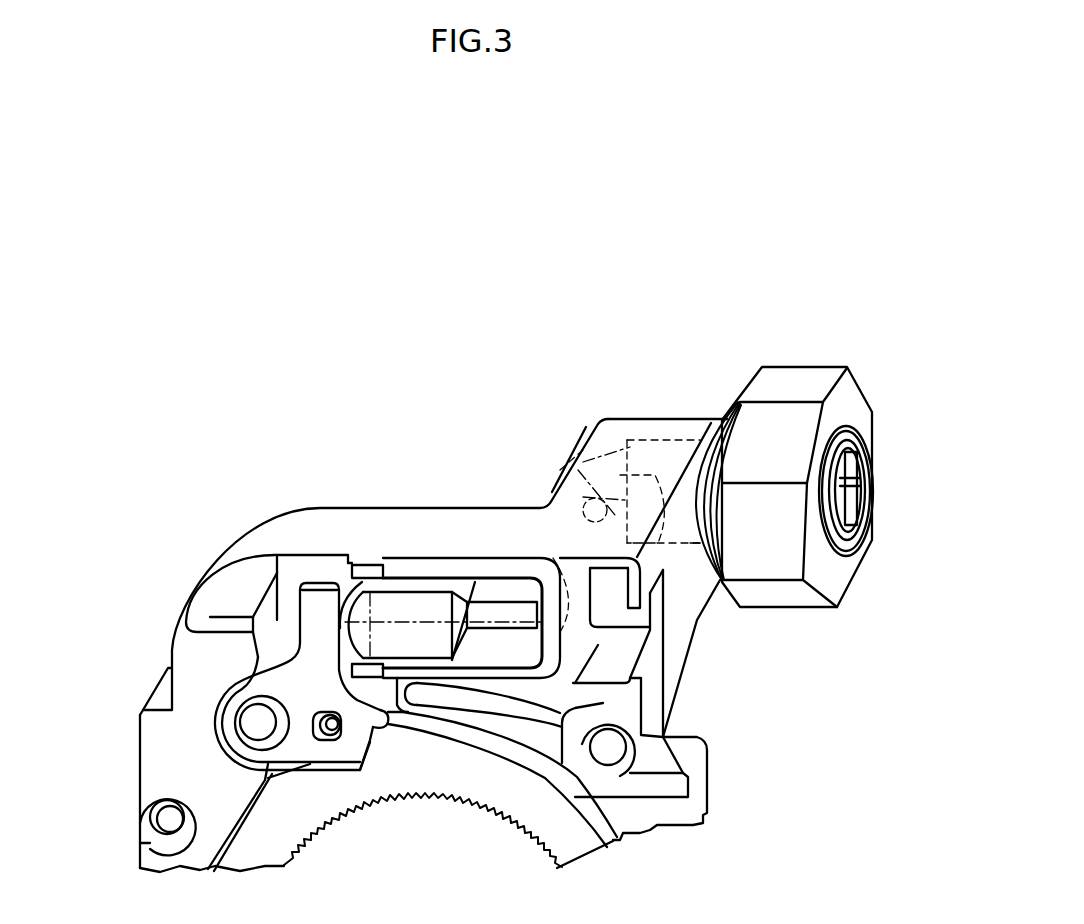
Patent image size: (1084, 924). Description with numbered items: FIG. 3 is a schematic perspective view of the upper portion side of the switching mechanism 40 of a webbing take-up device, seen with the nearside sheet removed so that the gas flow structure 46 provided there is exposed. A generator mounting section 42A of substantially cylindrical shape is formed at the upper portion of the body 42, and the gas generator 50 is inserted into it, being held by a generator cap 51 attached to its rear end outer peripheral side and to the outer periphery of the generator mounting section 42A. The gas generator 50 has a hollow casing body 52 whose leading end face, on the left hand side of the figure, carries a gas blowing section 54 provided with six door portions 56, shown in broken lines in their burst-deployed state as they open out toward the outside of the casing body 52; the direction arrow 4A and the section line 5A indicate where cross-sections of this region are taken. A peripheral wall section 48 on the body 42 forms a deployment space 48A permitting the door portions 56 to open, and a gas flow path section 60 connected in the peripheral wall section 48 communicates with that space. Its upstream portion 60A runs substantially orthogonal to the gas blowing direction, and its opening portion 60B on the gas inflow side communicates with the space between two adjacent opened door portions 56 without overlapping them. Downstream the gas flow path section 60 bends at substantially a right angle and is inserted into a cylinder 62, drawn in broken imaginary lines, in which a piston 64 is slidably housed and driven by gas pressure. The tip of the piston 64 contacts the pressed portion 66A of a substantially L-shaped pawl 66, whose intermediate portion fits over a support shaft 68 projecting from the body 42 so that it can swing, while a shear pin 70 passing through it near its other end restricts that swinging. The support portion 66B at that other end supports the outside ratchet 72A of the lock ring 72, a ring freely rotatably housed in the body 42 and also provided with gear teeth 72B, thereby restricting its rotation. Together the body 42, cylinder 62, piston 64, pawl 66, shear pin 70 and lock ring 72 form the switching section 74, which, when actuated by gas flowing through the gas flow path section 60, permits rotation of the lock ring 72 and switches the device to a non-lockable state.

The switching mechanism 40 is at (513, 198).
The body 42 is at (694, 372).
The generator mounting section 42A is at (731, 405).
The gas flow structure 46 is at (567, 502).
The peripheral wall section 48 is at (583, 427).
The deployment space 48A is at (605, 428).
The gas generator 50 is at (693, 548).
The generator cap 51 is at (815, 372).
The casing body 52 is at (680, 440).
The gas blowing section 54 is at (620, 440).
The door portions 56 is at (572, 432).
The gas flow path section 60 is at (557, 548).
The upstream portion 60A is at (575, 522).
The opening portion 60B is at (573, 490).
The cylinder 62 is at (474, 664).
The piston 64 is at (402, 590).
The pawl 66 is at (228, 699).
The pressed portion 66A is at (358, 583).
The support portion 66B is at (373, 747).
The support shaft 68 is at (250, 733).
The shear pin 70 is at (316, 714).
The lock ring 72 is at (587, 843).
The outside ratchet 72A is at (386, 722).
The gear teeth 72B is at (437, 805).
The switching section 74 is at (290, 612).
The direction arrow 4A is at (660, 406).
The section line 5A is at (818, 628).